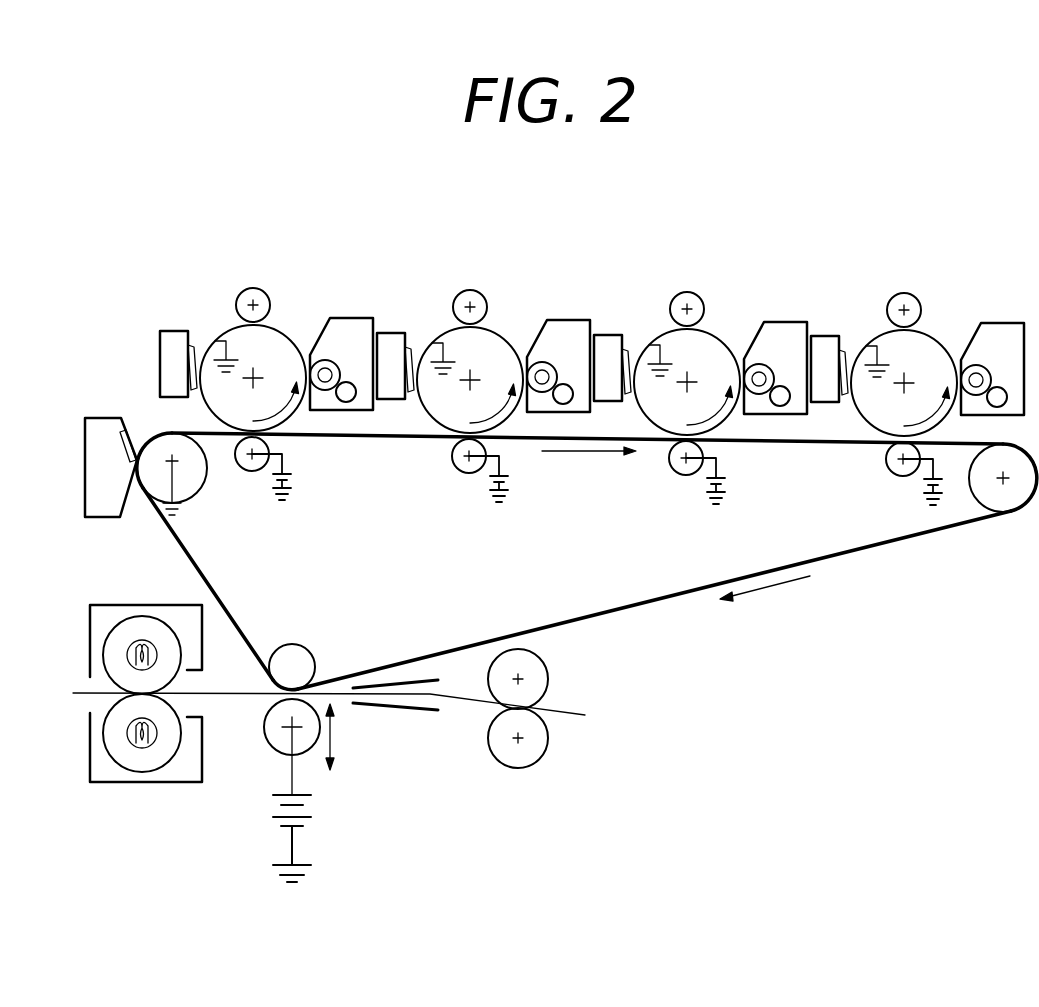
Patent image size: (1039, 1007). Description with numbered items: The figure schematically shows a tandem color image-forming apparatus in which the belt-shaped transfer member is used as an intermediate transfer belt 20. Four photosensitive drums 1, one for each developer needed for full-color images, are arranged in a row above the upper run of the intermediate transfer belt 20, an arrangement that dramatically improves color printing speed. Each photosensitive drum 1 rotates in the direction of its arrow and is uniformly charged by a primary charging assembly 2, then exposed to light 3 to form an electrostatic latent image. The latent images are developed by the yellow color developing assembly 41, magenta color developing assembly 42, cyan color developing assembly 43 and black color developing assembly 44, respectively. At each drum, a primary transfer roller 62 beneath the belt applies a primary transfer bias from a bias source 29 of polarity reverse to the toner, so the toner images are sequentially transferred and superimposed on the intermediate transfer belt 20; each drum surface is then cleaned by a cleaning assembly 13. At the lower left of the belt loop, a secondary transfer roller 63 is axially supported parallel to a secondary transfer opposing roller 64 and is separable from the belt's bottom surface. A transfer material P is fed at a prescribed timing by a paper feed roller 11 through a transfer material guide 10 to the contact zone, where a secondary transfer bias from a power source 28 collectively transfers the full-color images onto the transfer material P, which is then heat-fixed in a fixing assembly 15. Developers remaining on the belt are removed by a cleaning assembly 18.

The photosensitive drum 1 is at (578, 336).
The primary charging assembly 2 is at (578, 282).
The light 3 is at (640, 267).
The transfer material guide 10 is at (392, 708).
The paper feed roller 11 is at (548, 684).
The cleaning assembly 13 is at (502, 339).
The fixing assembly 15 is at (90, 615).
The cleaning assembly 18 is at (85, 441).
The intermediate transfer belt 20 is at (217, 586).
The power source 28 is at (311, 810).
The bias source 29 is at (597, 487).
The yellow color developing assembly 41 is at (342, 337).
The magenta color developing assembly 42 is at (559, 339).
The cyan color developing assembly 43 is at (776, 341).
The black color developing assembly 44 is at (993, 342).
The primary transfer roller 62 is at (571, 486).
The secondary transfer roller 63 is at (276, 754).
The secondary transfer opposing roller 64 is at (305, 652).
The transfer material P is at (560, 718).